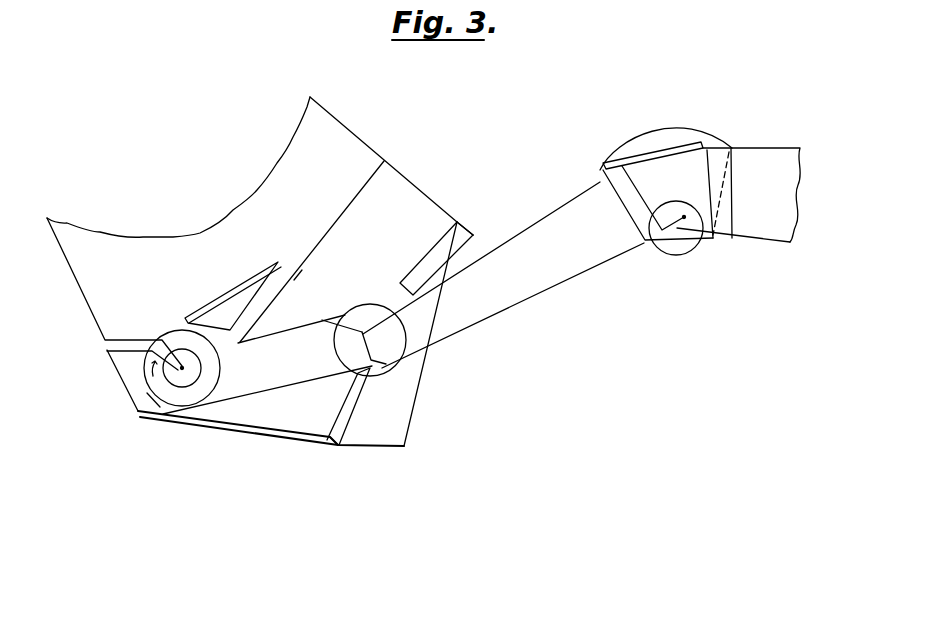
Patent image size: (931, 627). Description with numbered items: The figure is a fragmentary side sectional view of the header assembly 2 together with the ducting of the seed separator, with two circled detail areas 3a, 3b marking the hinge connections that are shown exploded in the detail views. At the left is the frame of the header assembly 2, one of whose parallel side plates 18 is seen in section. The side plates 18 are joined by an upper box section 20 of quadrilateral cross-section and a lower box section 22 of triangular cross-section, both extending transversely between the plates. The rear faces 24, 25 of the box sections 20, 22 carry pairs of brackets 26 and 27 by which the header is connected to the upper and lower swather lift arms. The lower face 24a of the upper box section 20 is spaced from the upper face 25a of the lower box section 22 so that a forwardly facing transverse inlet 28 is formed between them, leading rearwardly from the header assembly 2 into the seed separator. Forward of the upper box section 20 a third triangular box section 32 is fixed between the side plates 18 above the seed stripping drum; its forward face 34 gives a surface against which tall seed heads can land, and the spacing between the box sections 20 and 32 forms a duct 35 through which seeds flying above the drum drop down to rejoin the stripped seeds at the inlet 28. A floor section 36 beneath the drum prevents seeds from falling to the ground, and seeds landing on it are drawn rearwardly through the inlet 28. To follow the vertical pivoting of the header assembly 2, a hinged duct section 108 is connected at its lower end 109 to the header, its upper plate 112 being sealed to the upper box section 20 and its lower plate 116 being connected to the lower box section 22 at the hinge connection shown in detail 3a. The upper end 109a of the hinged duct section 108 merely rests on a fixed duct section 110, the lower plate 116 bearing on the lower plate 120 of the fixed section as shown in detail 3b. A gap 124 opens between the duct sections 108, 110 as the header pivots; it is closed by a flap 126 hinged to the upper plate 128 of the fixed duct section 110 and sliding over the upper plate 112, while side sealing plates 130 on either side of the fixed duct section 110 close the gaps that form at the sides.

The header assembly 2 is at (372, 148).
The side plates 18 is at (82, 290).
The upper box section 20 is at (367, 187).
The lower box section 22 is at (250, 420).
The rear face of upper box section 24 is at (431, 251).
The lower face of upper box section 24a is at (279, 335).
The rear face of lower box section 25 is at (342, 397).
The lower flange edge line 25a is at (272, 386).
The brackets 26 is at (463, 229).
The brackets 27 is at (344, 425).
The transverse inlet 28 is at (258, 376).
The third box section 32 is at (244, 290).
The forward face of third box section 34 is at (213, 305).
The duct 35 is at (288, 275).
The floor section 36 is at (163, 411).
The hinged duct section 108 is at (503, 275).
The lower end of hinged duct section 109 is at (392, 358).
The upper end of hinged duct section 109a is at (623, 242).
The fixed duct section 110 is at (742, 152).
The upper plate of hinged duct section 112 is at (553, 220).
The lower plate of hinged duct section 116 is at (540, 295).
The lower plate of fixed duct section 120 is at (757, 242).
The gap 124 is at (681, 183).
The flap 126 is at (673, 152).
The upper plate of fixed duct section 128 is at (777, 150).
The side sealing plates 130 is at (633, 140).
The exploded sectional view of lower hinge connection 3a is at (378, 340).
The exploded sectional view of upper hinge connection 3b is at (676, 221).